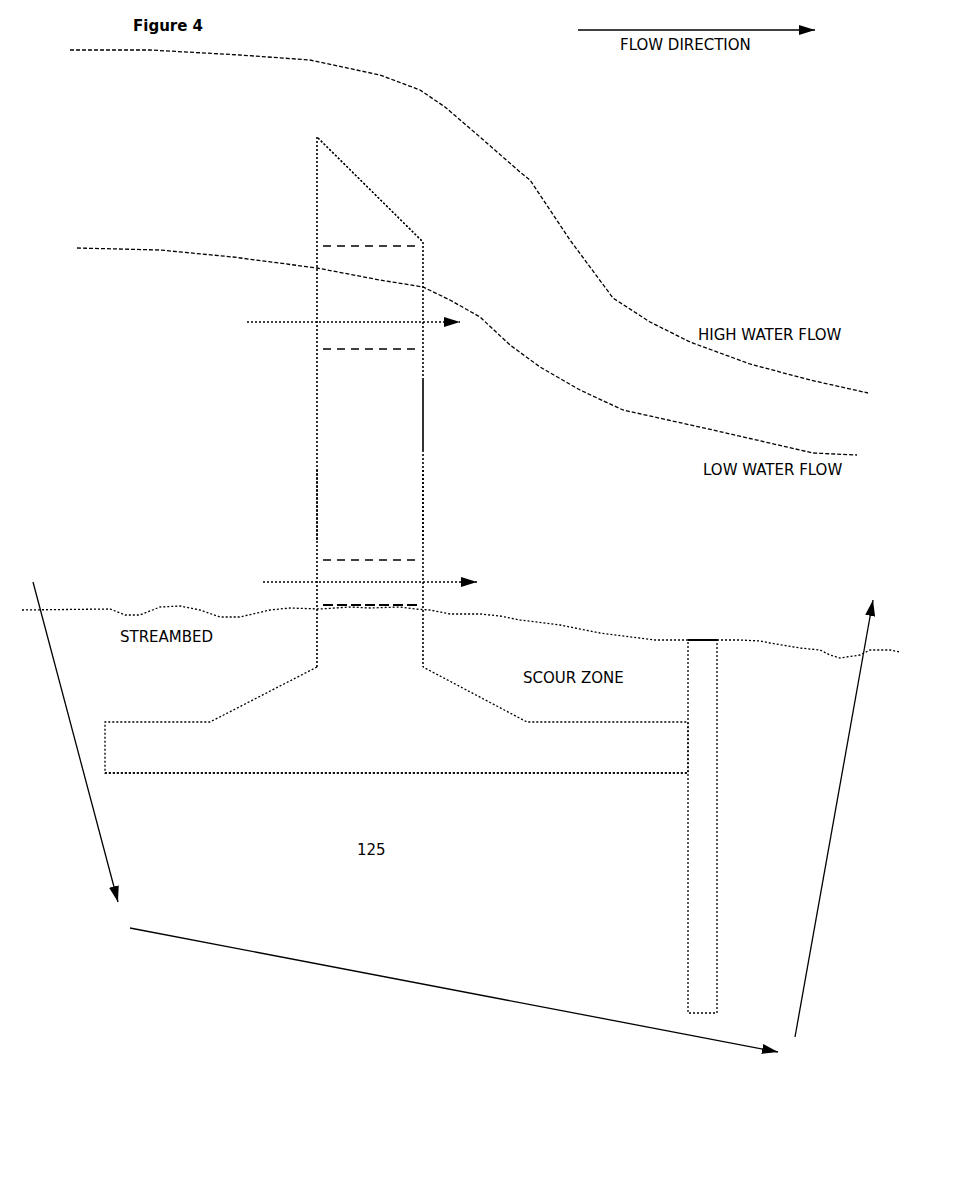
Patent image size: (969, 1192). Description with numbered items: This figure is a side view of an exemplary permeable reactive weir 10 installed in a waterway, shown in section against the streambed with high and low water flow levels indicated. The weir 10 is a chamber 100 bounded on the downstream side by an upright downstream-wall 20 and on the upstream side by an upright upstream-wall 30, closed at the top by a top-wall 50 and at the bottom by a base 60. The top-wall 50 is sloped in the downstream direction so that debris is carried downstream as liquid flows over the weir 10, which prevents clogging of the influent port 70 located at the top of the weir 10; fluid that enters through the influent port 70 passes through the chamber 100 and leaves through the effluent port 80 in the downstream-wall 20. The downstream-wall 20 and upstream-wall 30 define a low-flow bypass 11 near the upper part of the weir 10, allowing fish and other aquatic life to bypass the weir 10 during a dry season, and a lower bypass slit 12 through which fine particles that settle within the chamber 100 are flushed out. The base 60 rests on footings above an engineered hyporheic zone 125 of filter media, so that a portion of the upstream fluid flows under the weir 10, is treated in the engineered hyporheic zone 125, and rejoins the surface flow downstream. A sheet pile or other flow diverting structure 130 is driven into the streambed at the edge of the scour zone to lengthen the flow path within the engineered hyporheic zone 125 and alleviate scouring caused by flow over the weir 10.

The permeable reactive weir 10 is at (312, 208).
The low-flow bypass 11 is at (357, 310).
The bypass slit 12 is at (329, 574).
The downstream-wall 20 is at (426, 500).
The upstream-wall 30 is at (316, 503).
The top-wall 50 is at (353, 170).
The influent port 70 is at (353, 170).
The base 60 is at (287, 778).
The effluent port 80 is at (424, 413).
The chamber 100 is at (352, 417).
The engineered hyporheic zone 125 is at (396, 816).
The sheet pile or flow diverting structure 130 is at (718, 957).